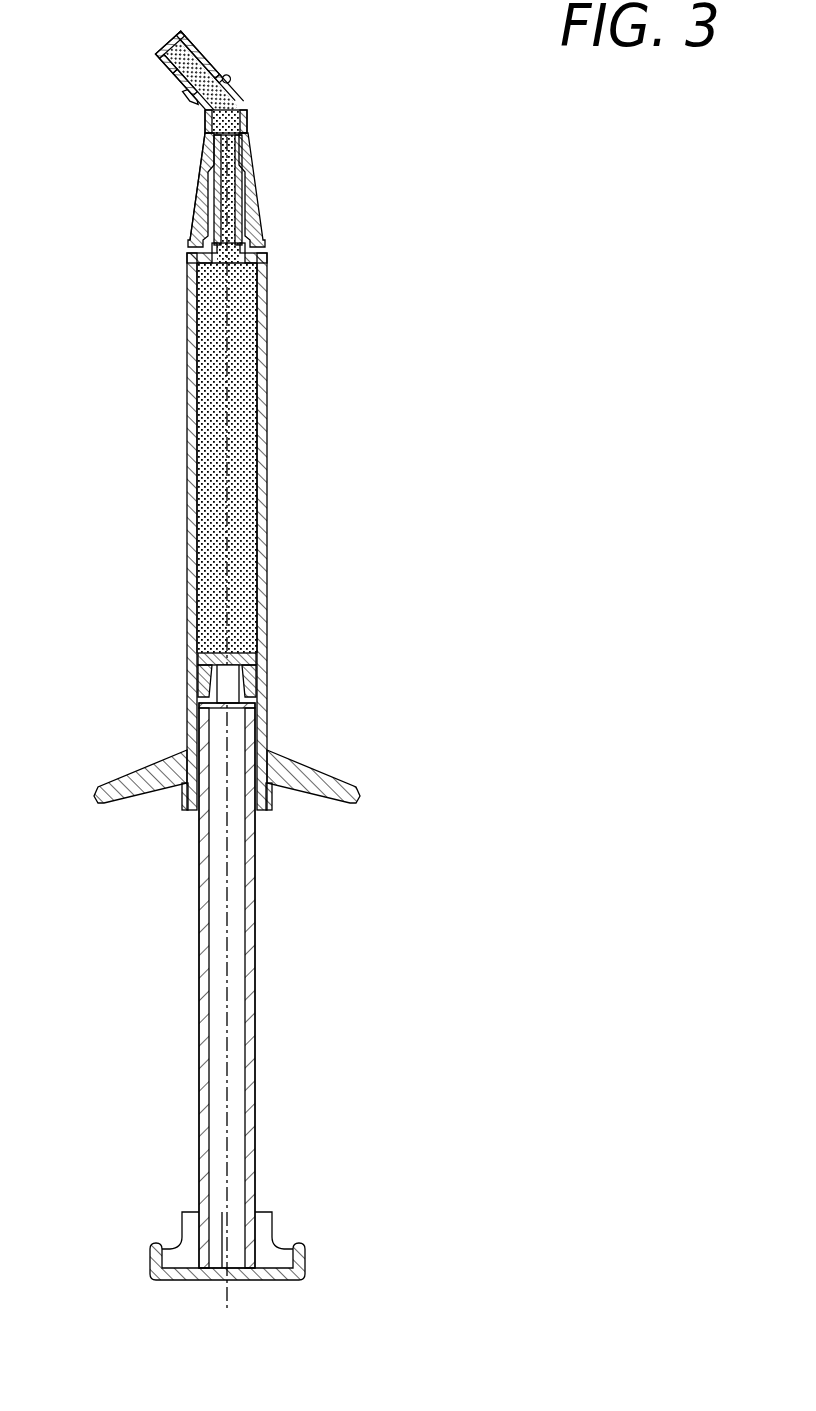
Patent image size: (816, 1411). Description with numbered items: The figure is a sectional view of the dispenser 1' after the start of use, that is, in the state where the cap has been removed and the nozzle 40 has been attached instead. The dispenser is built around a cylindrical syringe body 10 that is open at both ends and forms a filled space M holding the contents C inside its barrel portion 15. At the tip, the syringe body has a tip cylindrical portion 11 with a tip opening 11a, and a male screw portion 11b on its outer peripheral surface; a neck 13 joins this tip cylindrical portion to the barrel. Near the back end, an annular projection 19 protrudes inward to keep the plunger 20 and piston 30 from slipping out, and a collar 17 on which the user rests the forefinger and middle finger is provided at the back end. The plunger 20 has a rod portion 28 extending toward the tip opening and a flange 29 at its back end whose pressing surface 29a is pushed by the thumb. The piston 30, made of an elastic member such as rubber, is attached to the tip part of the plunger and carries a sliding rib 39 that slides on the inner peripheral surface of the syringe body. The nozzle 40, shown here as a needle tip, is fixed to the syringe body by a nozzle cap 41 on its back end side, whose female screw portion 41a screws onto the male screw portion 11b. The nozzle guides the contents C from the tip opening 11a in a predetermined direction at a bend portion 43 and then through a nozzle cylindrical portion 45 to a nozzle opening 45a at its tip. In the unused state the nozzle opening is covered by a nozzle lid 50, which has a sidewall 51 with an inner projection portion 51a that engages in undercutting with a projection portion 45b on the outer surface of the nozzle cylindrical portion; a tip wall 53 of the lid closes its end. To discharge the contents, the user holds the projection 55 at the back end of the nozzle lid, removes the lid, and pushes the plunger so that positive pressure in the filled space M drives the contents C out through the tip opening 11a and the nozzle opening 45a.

The dispenser 1' is at (358, 674).
The syringe body 10 is at (227, 460).
The tip cylindrical portion 11 is at (273, 177).
The tip opening 11a is at (238, 139).
The male screw portion 11b is at (256, 231).
The neck 13 is at (246, 252).
The barrel portion 15 is at (268, 446).
The collar 17 is at (322, 786).
The annular projection 19 is at (190, 745).
The plunger 20 is at (254, 993).
The rod portion 28 is at (256, 912).
The flange 29 is at (299, 1275).
The pressing surface 29a is at (260, 1282).
The piston 30 is at (258, 663).
The sliding rib 39 is at (255, 688).
The nozzle 40 is at (225, 166).
The nozzle cap 41 is at (196, 205).
The female screw portion 41a is at (200, 208).
The bend portion 43 is at (249, 104).
The nozzle cylindrical portion 45 is at (197, 54).
The nozzle opening 45a is at (169, 44).
The projection portion 45b is at (219, 78).
The nozzle lid 50 is at (198, 78).
The sidewall 51 is at (185, 82).
The projection portion 51a is at (191, 97).
The seal tip 53 is at (168, 63).
The projection 55 is at (226, 78).
The filled space M is at (222, 479).
The contents C is at (245, 583).